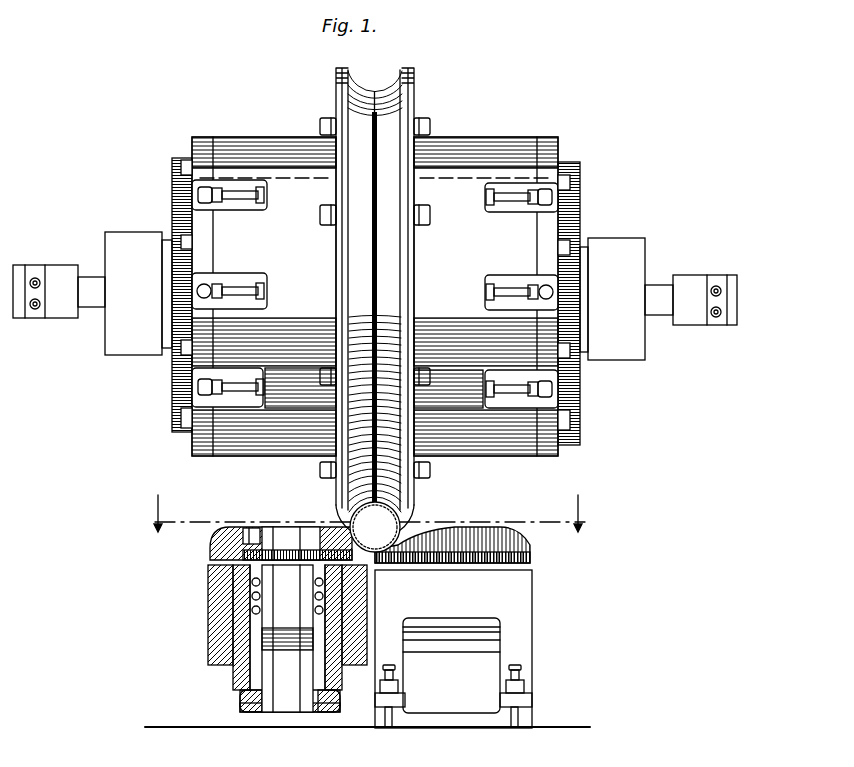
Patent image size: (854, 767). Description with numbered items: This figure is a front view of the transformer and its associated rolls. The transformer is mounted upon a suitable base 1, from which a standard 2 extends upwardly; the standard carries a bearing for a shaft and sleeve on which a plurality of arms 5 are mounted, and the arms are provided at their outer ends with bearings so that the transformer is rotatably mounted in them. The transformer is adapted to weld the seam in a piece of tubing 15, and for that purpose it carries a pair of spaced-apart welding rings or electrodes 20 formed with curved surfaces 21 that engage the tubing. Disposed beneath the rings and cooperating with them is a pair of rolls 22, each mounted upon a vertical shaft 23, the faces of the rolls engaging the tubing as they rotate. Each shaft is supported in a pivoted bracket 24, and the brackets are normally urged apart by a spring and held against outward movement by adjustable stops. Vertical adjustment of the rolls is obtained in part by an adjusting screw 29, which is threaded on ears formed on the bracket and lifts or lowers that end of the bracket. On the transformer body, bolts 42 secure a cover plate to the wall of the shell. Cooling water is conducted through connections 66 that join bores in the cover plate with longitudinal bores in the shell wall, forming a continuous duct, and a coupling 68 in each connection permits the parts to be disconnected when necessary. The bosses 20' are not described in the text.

The base 1 is at (587, 727).
The standard 2 is at (367, 509).
The arms 5 is at (122, 233).
The tubing 15 is at (360, 520).
The welding rings 20 is at (376, 299).
The bosses 20' is at (368, 301).
The curved surfaces 21 is at (392, 86).
The rolls 22 is at (220, 550).
The vertical shaft 23 is at (278, 648).
The bracket 24 is at (212, 606).
The adjusting screw 29 is at (382, 676).
The bolts 42 is at (178, 366).
The connections 66 is at (192, 191).
The coupling 68 is at (217, 286).